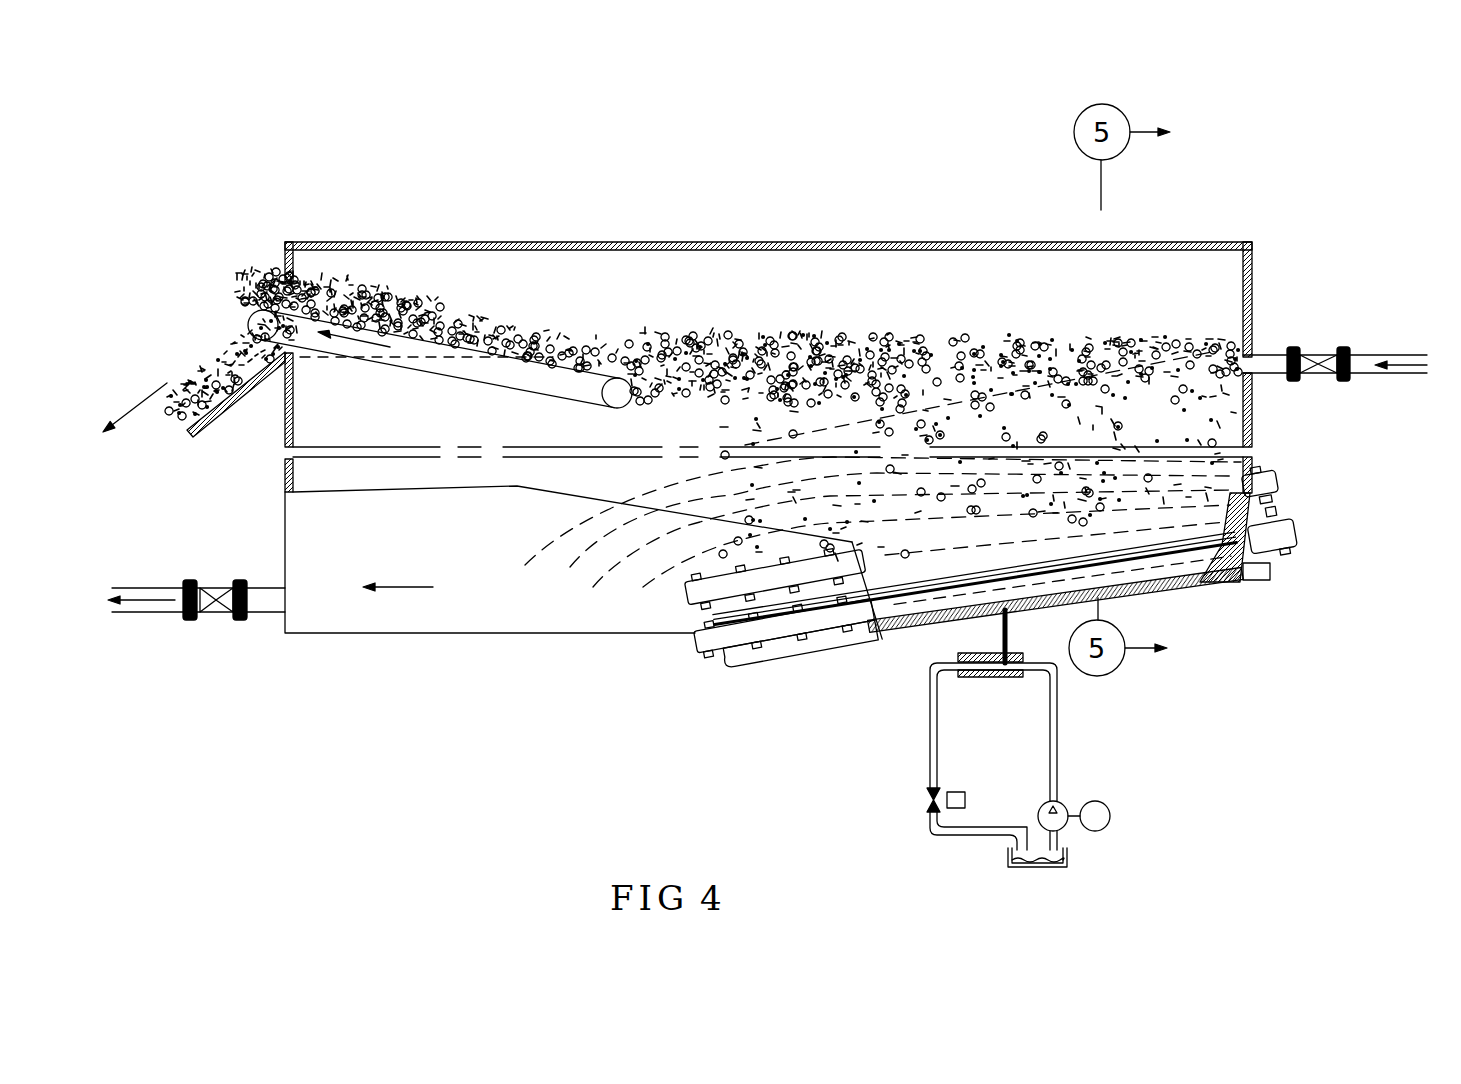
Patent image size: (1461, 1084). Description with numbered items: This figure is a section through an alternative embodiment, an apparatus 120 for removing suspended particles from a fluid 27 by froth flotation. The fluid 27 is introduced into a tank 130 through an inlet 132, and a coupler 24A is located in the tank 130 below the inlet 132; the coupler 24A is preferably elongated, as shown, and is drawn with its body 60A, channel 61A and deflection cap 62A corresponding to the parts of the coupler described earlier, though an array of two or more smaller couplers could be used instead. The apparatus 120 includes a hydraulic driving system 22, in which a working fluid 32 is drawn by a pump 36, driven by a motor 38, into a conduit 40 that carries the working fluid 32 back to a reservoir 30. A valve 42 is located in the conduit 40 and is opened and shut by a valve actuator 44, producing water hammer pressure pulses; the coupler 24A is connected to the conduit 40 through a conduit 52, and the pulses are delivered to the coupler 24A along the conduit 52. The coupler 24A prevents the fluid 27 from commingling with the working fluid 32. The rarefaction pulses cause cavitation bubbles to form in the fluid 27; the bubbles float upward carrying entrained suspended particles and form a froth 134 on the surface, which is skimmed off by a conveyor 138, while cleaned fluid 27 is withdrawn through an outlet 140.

The apparatus 120 is at (1160, 218).
The tank 130 is at (1253, 272).
The inlet 132 is at (1262, 350).
The froth 134 is at (663, 322).
The conveyor 138 is at (413, 350).
The outlet 140 is at (263, 600).
The coupler 24A is at (1318, 453).
The roller 60A is at (1287, 515).
The roller 61A is at (862, 663).
The screen 62A is at (1152, 562).
The fluid 27 is at (597, 587).
The hydraulic driving system 22 is at (1198, 736).
The conduit 52 is at (997, 642).
The conduit 40 is at (940, 758).
The valve 42 is at (927, 795).
The valve actuator 44 is at (968, 803).
The pump 36 is at (1063, 806).
The motor 38 is at (1110, 822).
The reservoir 30 is at (1070, 857).
The working fluid 32 is at (1038, 860).